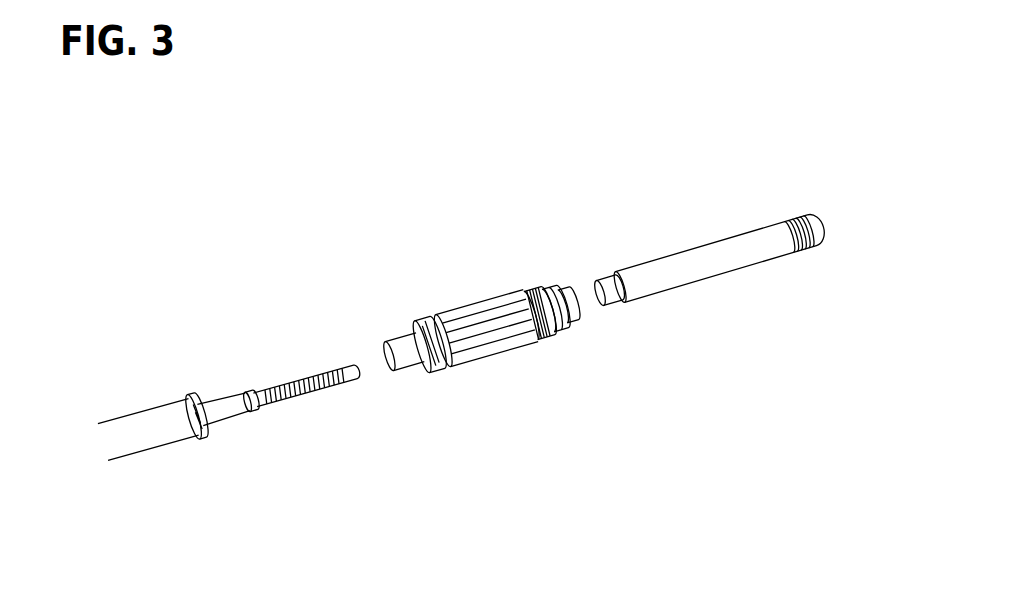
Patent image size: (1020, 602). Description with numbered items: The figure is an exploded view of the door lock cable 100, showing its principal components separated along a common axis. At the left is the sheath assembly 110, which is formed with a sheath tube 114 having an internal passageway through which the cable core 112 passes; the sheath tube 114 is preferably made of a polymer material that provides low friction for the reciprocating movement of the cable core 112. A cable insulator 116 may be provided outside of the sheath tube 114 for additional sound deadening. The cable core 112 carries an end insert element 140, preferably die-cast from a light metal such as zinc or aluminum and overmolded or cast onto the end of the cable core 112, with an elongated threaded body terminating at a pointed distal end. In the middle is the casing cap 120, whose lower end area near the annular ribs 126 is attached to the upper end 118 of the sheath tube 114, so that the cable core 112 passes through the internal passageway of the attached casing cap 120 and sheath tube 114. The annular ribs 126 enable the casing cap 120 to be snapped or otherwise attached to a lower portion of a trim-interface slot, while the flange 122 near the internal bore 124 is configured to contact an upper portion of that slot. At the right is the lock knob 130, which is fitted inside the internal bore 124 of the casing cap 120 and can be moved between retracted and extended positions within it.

The door lock cable 100 is at (457, 107).
The sheath assembly 110 is at (160, 402).
The cable core 112 is at (250, 400).
The sheath tube 114 is at (218, 413).
The cable insulator 116 is at (135, 435).
The upper end 118 is at (250, 401).
The casing cap 120 is at (487, 310).
The flange 122 is at (530, 290).
The internal bore 124 is at (574, 305).
The annular ribs 126 is at (472, 370).
The lock knob 130 is at (719, 254).
The end insert element 140 is at (313, 374).